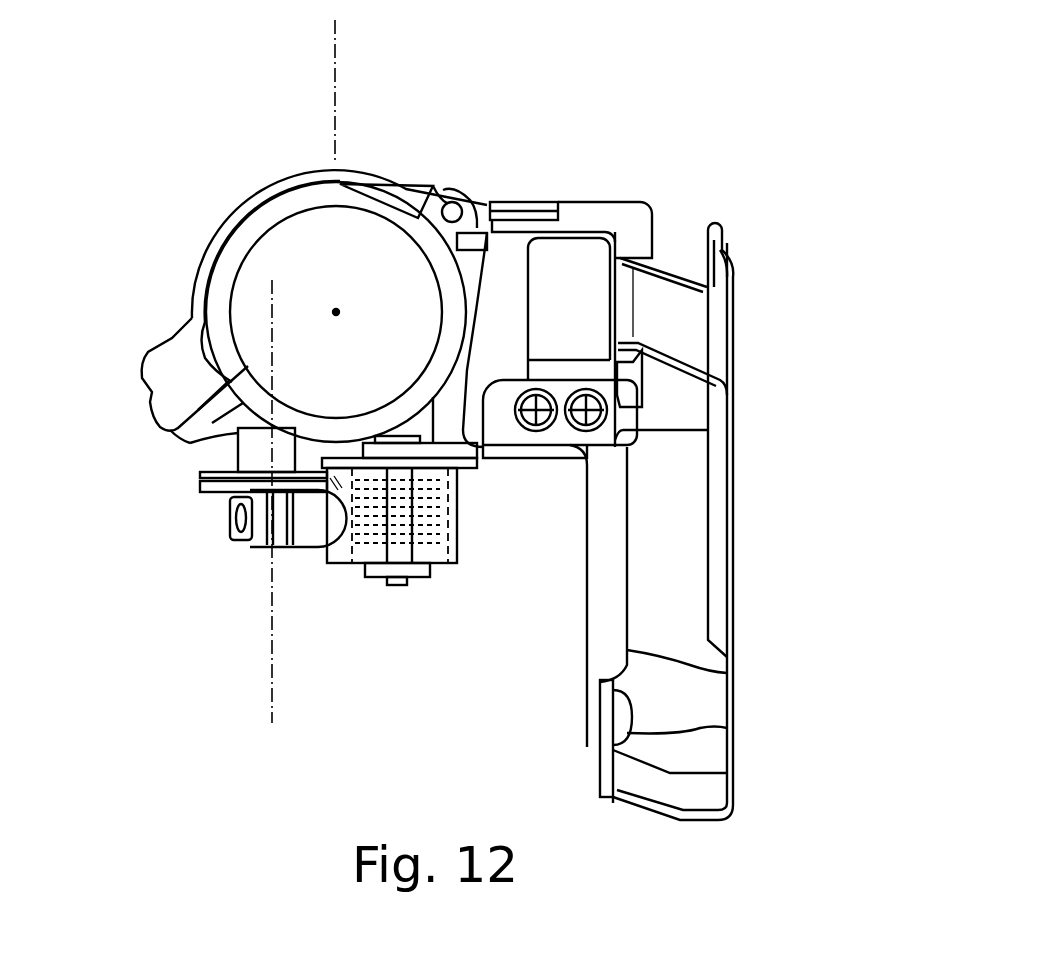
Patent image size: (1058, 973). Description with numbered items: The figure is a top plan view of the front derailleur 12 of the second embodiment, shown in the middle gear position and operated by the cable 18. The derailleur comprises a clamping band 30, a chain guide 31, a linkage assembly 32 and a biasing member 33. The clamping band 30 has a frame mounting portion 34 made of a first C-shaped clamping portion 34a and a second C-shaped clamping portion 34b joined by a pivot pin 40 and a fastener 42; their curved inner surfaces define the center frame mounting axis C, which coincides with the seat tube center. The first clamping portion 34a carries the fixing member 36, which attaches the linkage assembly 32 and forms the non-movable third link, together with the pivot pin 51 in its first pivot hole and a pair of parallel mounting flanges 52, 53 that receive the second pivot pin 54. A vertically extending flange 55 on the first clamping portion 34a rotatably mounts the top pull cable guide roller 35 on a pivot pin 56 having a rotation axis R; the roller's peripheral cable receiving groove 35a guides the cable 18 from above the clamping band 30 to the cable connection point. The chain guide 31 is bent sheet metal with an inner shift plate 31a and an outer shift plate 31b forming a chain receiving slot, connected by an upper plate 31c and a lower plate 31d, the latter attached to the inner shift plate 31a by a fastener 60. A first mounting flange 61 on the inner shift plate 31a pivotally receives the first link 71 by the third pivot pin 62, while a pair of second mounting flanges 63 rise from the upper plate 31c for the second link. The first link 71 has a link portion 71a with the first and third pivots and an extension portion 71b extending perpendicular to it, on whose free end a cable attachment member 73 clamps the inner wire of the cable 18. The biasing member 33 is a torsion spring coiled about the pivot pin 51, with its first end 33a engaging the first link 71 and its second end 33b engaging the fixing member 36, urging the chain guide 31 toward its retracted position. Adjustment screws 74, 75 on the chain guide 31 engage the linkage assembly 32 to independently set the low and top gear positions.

The front derailleur 12 is at (686, 116).
The cable 18 is at (438, 543).
The clamping band 30 is at (373, 163).
The chain guide 31 is at (746, 537).
The inner shift plate 31a is at (733, 678).
The outer shift plate 31b is at (735, 637).
The upper plate 31c is at (670, 267).
The lower plate 31d is at (677, 797).
The linkage assembly 32 is at (538, 173).
The biasing member 33 is at (457, 557).
The first end of biasing member 33a is at (350, 557).
The second end of biasing member 33b is at (457, 462).
The frame mounting portion 34 is at (265, 198).
The first C-shaped clamping portion 34a is at (380, 407).
The second C-shaped clamping portion 34b is at (248, 226).
The top pull cable guide roller 35 is at (205, 500).
The cable receiving groove 35a is at (205, 485).
The fixing member 36 is at (472, 406).
The pivot pin 40 is at (450, 203).
The fastener 42 is at (152, 350).
The pivot pin 51 is at (403, 585).
The mounting flange 52 is at (515, 458).
The mounting flange 53 is at (503, 220).
The second pivot pin 54 is at (457, 528).
The vertically extending flange 55 is at (207, 437).
The pivot pin 56 is at (262, 545).
The fastener 60 is at (727, 730).
The first mounting flange 61 is at (490, 460).
The third pivot pin 62 is at (557, 202).
The second mounting flanges 63 is at (590, 212).
The first link 71 is at (342, 566).
The link portion 71a is at (440, 560).
The extension portion 71b is at (305, 550).
The cable attachment member 73 is at (233, 537).
The adjustment screw 74 is at (540, 402).
The adjustment screw 75 is at (592, 411).
The center frame mounting axis C is at (336, 312).
The rotation axis R is at (215, 510).